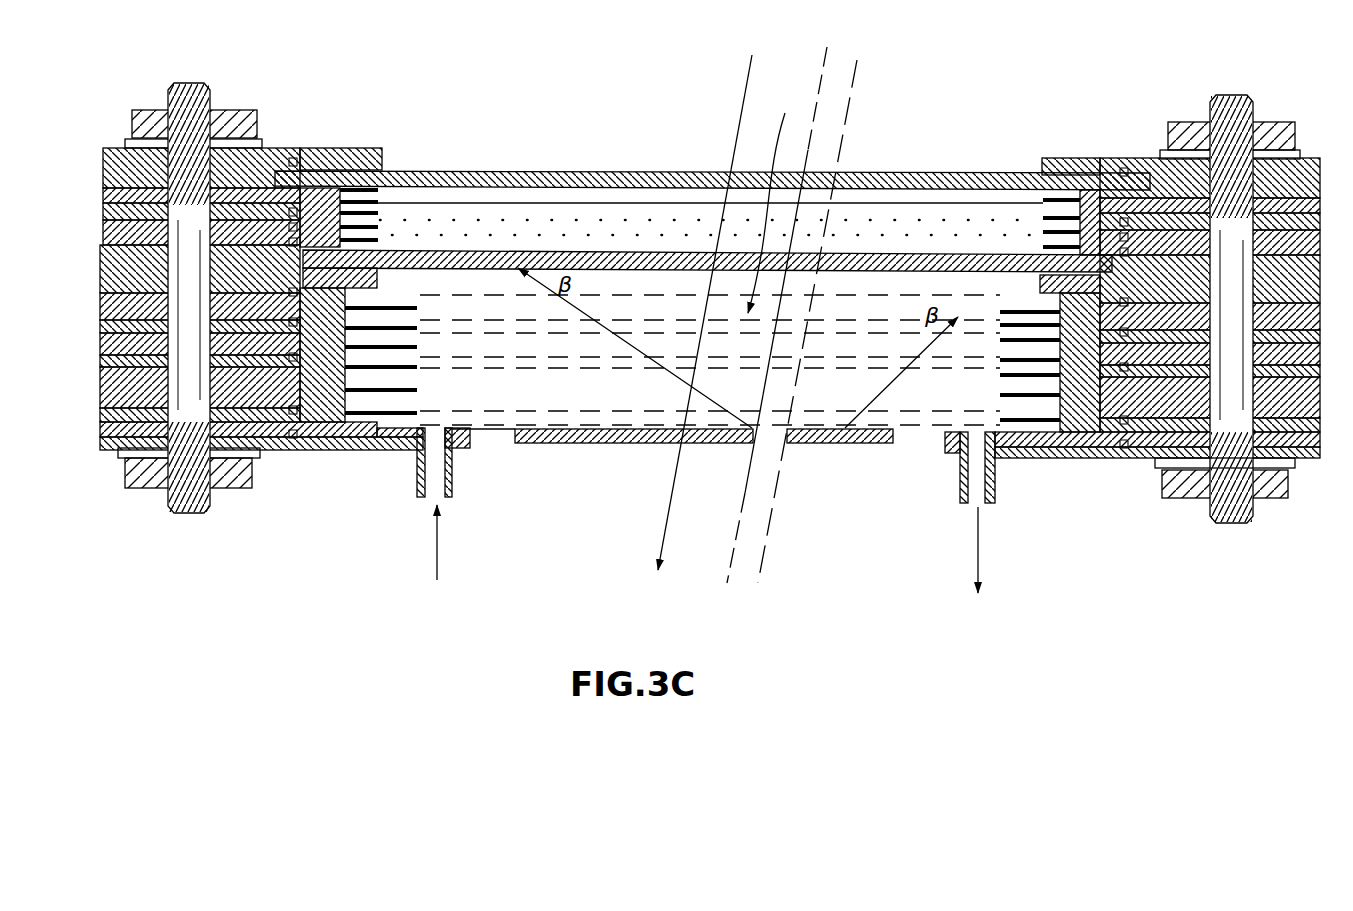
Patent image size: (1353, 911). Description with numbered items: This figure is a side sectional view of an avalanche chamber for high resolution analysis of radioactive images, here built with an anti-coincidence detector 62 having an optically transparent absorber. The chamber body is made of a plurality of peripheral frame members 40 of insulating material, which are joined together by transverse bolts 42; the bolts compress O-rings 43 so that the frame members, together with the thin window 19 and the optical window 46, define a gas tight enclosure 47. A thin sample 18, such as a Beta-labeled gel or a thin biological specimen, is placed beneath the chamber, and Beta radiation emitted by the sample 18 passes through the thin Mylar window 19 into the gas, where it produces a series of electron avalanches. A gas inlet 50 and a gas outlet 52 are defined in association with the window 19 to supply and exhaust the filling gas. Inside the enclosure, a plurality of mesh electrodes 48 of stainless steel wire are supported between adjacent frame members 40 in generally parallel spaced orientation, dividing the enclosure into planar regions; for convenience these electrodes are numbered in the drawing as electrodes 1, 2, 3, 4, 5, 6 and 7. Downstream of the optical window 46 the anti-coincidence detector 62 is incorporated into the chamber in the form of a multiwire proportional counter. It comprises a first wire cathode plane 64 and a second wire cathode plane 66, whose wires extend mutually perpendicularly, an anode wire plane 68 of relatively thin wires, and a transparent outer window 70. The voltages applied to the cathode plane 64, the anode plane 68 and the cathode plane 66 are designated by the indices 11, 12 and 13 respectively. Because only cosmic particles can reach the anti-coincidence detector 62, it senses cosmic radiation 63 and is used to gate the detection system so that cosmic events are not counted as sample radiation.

The mesh electrode 1 is at (100, 423).
The mesh electrode 2 is at (100, 410).
The mesh electrode 3 is at (100, 369).
The mesh electrode 4 is at (100, 357).
The mesh electrode 5 is at (100, 332).
The mesh electrode 6 is at (100, 318).
The mesh electrode 7 is at (100, 292).
The voltage index of first cathode wire plane 11 is at (103, 232).
The voltage index of anode wire plane 12 is at (103, 212).
The voltage index of second cathode wire plane 13 is at (103, 187).
The sample 18 is at (578, 445).
The window 19 is at (487, 432).
The peripheral frame member 40 is at (1320, 355).
The transverse bolt 42 is at (205, 137).
The O-ring 43 is at (1145, 462).
The optical window 46 is at (870, 255).
The gas tight enclosure 47 is at (779, 202).
The mesh electrode 48 is at (462, 370).
The gas inlet 50 is at (450, 483).
The gas outlet 52 is at (995, 478).
The anticoincidence detector 62 is at (607, 212).
The cosmic radiation 63 is at (670, 515).
The first wire cathode plane 64 is at (665, 232).
The second wire cathode plane 66 is at (920, 210).
The anode wire plane 68 is at (960, 225).
The transparent outer window 70 is at (547, 172).